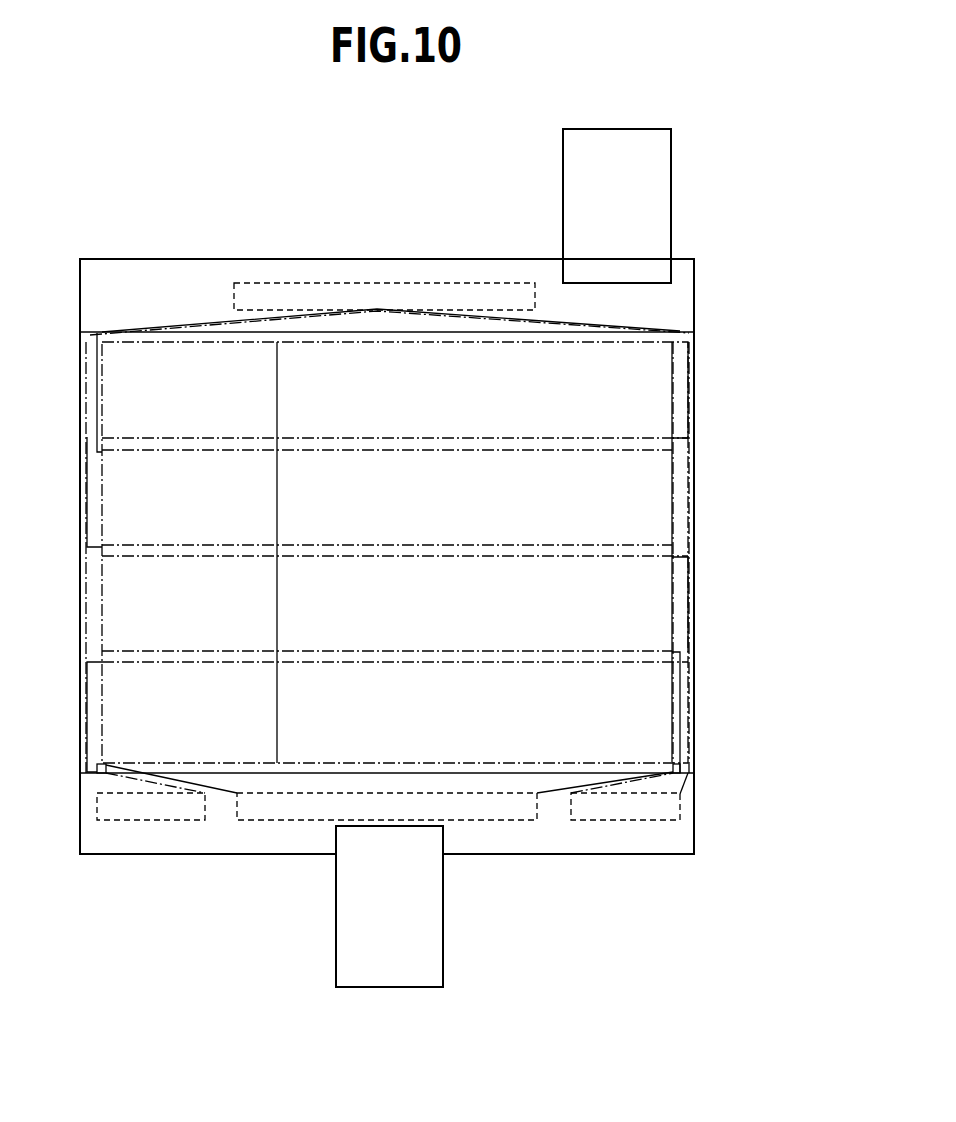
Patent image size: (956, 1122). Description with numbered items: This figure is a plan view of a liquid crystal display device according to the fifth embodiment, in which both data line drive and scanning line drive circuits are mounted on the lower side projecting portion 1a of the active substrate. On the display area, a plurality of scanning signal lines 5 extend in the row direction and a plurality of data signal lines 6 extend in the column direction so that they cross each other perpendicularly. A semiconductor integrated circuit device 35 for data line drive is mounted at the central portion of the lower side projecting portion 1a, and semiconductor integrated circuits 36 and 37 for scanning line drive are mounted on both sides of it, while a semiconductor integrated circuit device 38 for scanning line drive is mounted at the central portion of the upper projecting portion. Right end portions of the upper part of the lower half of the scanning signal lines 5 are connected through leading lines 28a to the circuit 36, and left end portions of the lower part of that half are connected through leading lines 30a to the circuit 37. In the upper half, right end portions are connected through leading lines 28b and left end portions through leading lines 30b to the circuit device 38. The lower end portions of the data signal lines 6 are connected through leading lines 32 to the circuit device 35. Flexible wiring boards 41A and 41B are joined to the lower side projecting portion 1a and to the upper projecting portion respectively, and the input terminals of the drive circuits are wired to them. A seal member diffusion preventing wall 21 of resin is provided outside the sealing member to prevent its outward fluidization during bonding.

The lower side projecting portion 1a is at (670, 840).
The seal member diffusion preventing wall 21 is at (105, 842).
The flexible wiring board 41A is at (430, 953).
The flexible wiring board 41B is at (660, 178).
The semiconductor integrated circuit device for scanning line drive 38 is at (342, 296).
The leading lines 32 is at (225, 783).
The semiconductor integrated circuit for scanning line drive 37 is at (162, 815).
The semiconductor integrated circuit device for data line drive 35 is at (287, 813).
The semiconductor integrated circuit for scanning line drive 36 is at (608, 812).
The scanning signal lines 5 is at (462, 449).
The data signal lines 6 is at (281, 723).
The leading lines 30b is at (92, 515).
The leading lines 30a is at (92, 731).
The leading lines 28b is at (682, 393).
The leading lines 28a is at (682, 592).